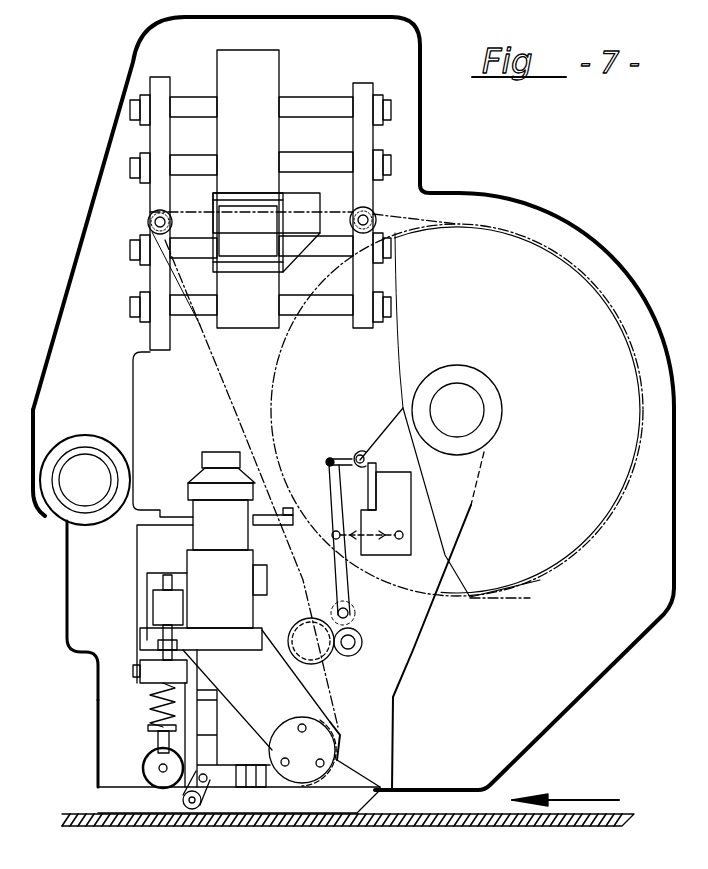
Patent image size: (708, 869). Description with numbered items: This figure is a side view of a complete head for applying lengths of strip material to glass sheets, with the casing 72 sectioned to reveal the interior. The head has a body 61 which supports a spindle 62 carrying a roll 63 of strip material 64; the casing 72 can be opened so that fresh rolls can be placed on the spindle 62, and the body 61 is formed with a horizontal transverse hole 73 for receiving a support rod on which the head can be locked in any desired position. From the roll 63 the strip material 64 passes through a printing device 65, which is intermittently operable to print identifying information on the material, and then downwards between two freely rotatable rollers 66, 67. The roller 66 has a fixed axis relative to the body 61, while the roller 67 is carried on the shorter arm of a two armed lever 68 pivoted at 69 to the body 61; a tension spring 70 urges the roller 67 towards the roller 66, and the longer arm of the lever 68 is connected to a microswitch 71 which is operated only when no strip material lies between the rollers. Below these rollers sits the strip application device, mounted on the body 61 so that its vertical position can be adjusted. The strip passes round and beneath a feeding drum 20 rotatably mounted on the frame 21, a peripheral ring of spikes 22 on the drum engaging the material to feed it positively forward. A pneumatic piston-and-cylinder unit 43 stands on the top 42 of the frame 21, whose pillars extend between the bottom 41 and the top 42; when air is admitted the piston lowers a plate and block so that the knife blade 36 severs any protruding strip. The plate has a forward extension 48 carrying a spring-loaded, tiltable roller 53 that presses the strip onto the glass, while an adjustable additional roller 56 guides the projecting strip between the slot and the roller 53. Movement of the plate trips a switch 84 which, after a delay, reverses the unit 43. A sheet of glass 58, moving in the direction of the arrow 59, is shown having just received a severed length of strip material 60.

The feeding drum 20 is at (337, 745).
The frame 21 is at (281, 708).
The spikes 22 is at (338, 735).
The knife blade 36 is at (233, 812).
The bottom of the frame 41 is at (280, 800).
The top of the frame 42 is at (218, 638).
The pneumatic piston-and-cylinder unit 43 is at (203, 535).
The forward extension 48 is at (150, 677).
The roller 53 is at (146, 768).
The additional roller 56 is at (175, 810).
The sheet of glass 58 is at (512, 826).
The arrow 59 is at (575, 798).
The length of strip material 60 is at (89, 812).
The body 61 is at (405, 650).
The spindle 62 is at (470, 408).
The roll 63 is at (568, 538).
The strip material 64 is at (404, 213).
The printing device 65 is at (260, 200).
The roller 66 is at (303, 626).
The roller 67 is at (362, 642).
The two armed lever 68 is at (343, 572).
The pivot 69 is at (349, 613).
The tension spring 70 is at (383, 543).
The microswitch 71 is at (404, 495).
The casing 72 is at (674, 532).
The horizontal transverse hole 73 is at (77, 490).
The switch 84 is at (150, 612).